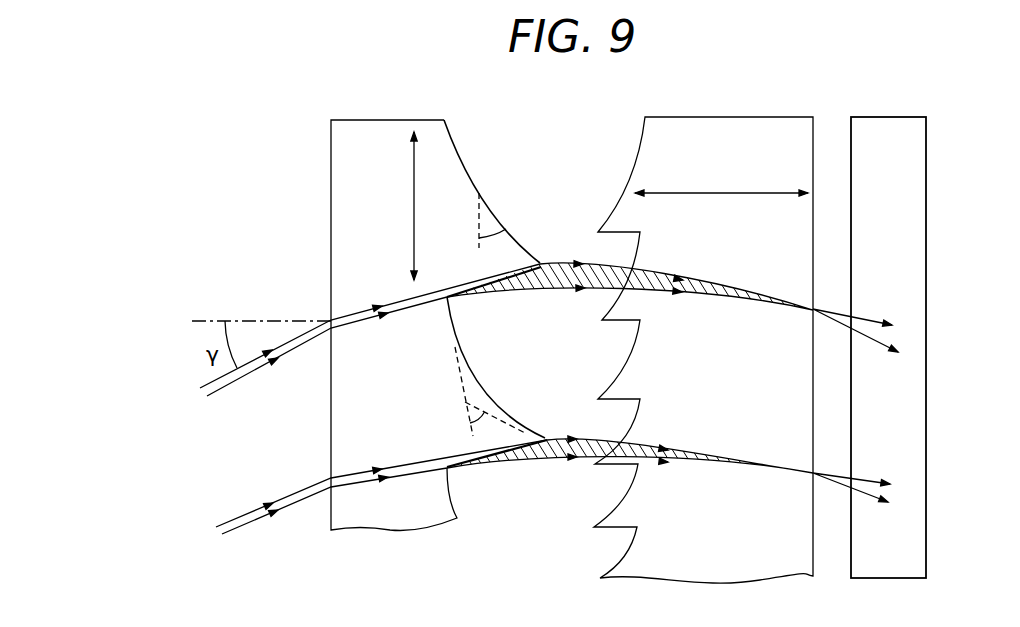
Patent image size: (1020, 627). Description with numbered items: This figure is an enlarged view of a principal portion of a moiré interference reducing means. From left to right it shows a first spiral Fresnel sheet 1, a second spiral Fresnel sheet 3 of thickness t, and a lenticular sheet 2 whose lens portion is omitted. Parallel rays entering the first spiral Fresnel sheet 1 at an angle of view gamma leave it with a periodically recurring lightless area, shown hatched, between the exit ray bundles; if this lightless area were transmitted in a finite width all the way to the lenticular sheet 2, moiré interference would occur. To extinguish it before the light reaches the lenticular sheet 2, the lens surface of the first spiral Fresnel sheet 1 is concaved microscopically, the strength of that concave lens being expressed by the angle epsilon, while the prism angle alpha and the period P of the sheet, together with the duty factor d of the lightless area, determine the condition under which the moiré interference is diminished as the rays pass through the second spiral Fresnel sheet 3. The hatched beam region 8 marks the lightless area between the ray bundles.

The spiral Fresnel sheet 1 is at (388, 118).
The lenticular sheet 2 is at (891, 117).
The spiral Fresnel sheet 3 is at (736, 117).
The light beam passing between the plates 8 is at (563, 266).